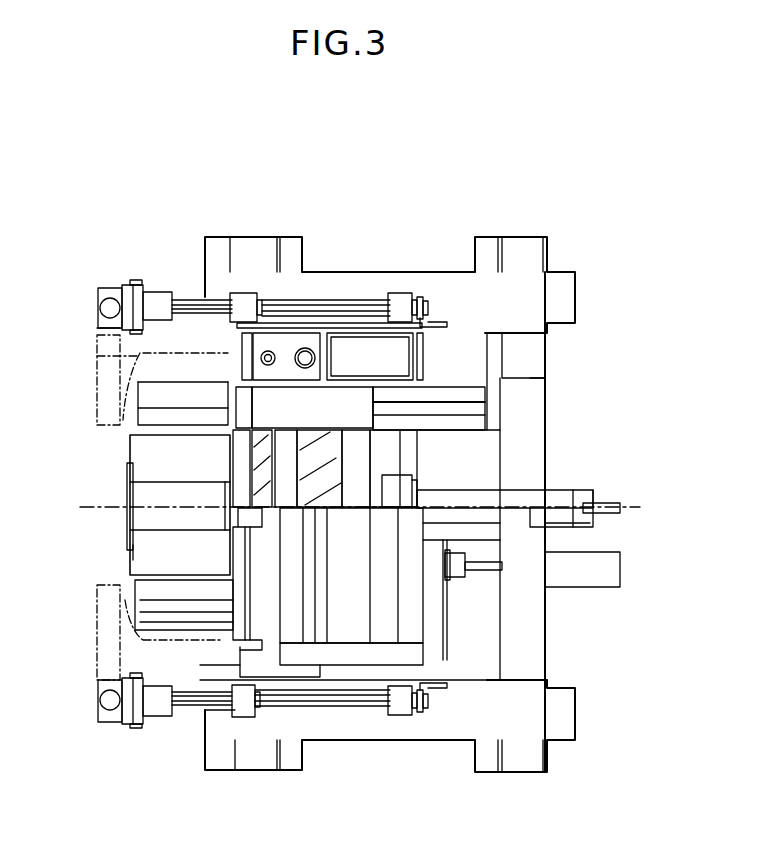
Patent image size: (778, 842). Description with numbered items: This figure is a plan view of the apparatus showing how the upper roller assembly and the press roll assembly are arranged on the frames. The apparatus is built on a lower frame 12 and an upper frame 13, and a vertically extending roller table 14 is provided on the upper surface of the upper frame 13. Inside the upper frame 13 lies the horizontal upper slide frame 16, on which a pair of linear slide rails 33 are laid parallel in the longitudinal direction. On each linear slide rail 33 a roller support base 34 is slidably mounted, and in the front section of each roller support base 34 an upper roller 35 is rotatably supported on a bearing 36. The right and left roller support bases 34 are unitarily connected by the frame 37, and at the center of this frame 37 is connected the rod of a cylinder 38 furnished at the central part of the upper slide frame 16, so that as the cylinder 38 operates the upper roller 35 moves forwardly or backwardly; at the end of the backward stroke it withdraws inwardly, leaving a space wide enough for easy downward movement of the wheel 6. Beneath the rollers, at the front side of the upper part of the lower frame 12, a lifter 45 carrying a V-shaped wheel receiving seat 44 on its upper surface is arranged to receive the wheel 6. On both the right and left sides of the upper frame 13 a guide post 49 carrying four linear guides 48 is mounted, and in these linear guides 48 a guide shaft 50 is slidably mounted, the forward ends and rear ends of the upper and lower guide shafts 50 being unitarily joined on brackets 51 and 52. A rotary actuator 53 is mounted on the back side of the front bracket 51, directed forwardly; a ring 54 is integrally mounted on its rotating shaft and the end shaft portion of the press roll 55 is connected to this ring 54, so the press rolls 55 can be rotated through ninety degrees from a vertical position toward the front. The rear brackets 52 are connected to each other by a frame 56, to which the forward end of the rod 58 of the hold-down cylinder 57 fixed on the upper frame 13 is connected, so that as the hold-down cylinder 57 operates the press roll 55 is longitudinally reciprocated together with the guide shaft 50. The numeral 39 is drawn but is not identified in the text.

The wheel 6 is at (97, 360).
The lower frame 12 is at (555, 300).
The upper frame 13 is at (525, 688).
The roller table 14 is at (232, 634).
The upper slide frame 16 is at (296, 348).
The linear slide rail 33 is at (470, 405).
The roller support base 34 is at (256, 418).
The upper roller 35 is at (170, 395).
The bearing 36 is at (246, 397).
The frame 37 is at (262, 450).
The cylinder 38 is at (570, 495).
The ejector plate 39 is at (400, 498).
The V-shaped wheel receiving seat 44 is at (150, 546).
The lifter 45 is at (125, 562).
The linear guide 48 is at (243, 295).
The guide post 49 is at (296, 300).
The guide shaft 50 is at (358, 305).
The bracket 51 is at (134, 283).
The bracket 52 is at (425, 298).
The rotary actuator 53 is at (160, 294).
The ring 54 is at (110, 290).
The press roll 55 is at (99, 302).
The frame 56 is at (440, 617).
The hold-down cylinder 57 is at (595, 588).
The rod 58 is at (484, 570).